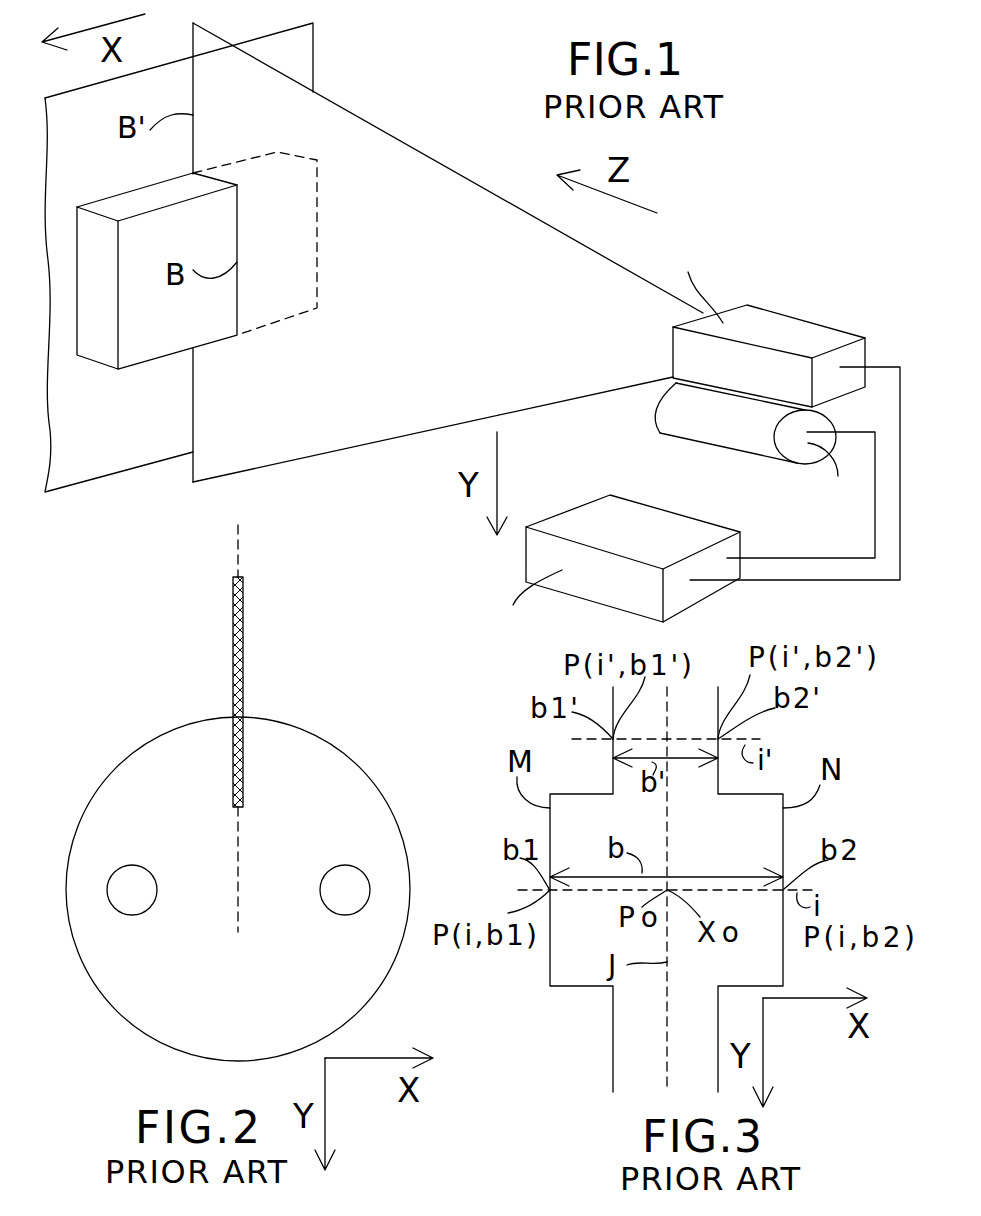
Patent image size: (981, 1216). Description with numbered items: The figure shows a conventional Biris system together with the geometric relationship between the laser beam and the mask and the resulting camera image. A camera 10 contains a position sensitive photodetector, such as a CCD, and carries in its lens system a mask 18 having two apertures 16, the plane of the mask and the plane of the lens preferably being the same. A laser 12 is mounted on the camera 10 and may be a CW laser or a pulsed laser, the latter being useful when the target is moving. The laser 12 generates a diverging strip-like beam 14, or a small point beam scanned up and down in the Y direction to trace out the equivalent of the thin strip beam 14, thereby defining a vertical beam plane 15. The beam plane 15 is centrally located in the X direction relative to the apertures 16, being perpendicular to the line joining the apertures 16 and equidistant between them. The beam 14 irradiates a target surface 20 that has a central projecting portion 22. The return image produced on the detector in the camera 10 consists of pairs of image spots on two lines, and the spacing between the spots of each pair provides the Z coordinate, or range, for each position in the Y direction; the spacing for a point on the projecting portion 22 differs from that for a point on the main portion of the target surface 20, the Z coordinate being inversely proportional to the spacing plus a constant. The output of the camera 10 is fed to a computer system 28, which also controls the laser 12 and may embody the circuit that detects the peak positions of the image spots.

In FIG. 1, the camera 10 is at (753, 436).
In FIG. 1, the laser 12 is at (788, 328).
In FIG. 1, the strip-like beam 14 is at (358, 137).
In FIG. 2, the strip-like beam 14 is at (233, 668).
In FIG. 2, the beam plane 15 is at (238, 545).
In FIG. 2, the apertures 16 is at (340, 895).
In FIG. 2, the mask 18 is at (298, 768).
In FIG. 1, the target surface 20 is at (143, 447).
In FIG. 1, the central projecting portion 22 is at (98, 238).
In FIG. 1, the computer system 28 is at (590, 528).